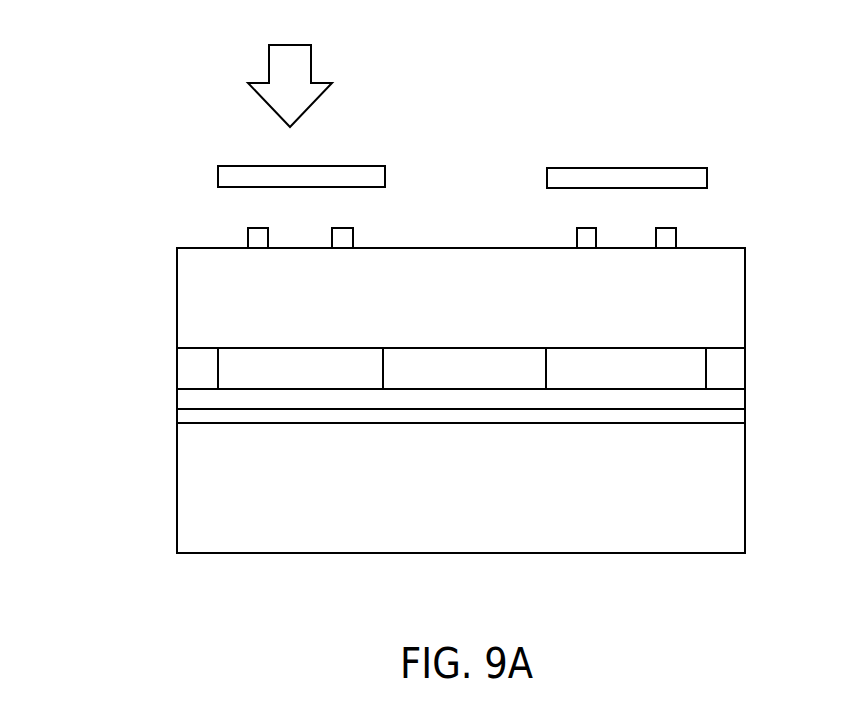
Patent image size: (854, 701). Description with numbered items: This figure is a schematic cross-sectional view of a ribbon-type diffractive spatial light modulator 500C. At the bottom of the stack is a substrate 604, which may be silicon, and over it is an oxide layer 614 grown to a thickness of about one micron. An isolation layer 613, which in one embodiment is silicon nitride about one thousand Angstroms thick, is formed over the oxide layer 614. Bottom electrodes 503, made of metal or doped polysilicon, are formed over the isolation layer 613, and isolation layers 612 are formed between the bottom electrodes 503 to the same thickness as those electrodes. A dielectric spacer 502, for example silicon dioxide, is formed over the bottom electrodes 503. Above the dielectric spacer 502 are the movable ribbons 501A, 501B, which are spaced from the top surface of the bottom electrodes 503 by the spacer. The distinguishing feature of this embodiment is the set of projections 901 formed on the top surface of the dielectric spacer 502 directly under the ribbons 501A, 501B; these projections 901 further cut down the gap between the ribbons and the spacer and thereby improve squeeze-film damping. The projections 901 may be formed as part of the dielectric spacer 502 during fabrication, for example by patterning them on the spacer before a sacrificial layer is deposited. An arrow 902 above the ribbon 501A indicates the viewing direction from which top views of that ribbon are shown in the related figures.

The ribbon-type diffractive spatial light modulator 500C is at (128, 268).
The arrow 902 is at (311, 62).
The ribbon 501A is at (256, 172).
The ribbon 501B is at (587, 172).
The projections 901 is at (657, 236).
The dielectric spacer 502 is at (489, 302).
The isolation layers 612 is at (494, 383).
The bottom electrodes 503 is at (319, 382).
The isolation layer 613 is at (186, 398).
The oxide layer 614 is at (474, 228).
The substrate 604 is at (499, 473).